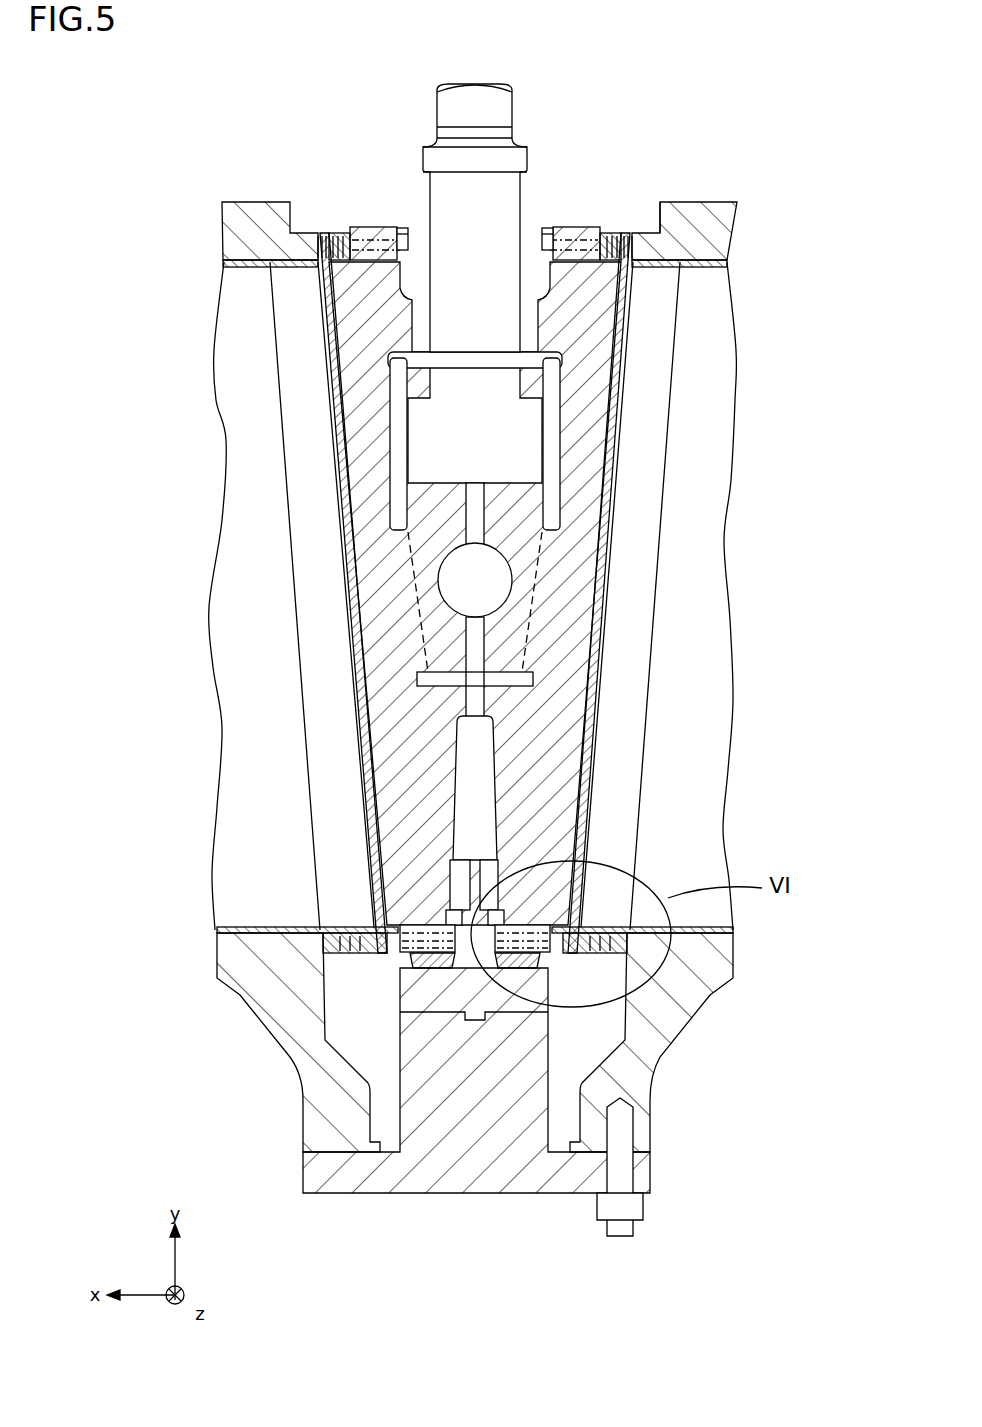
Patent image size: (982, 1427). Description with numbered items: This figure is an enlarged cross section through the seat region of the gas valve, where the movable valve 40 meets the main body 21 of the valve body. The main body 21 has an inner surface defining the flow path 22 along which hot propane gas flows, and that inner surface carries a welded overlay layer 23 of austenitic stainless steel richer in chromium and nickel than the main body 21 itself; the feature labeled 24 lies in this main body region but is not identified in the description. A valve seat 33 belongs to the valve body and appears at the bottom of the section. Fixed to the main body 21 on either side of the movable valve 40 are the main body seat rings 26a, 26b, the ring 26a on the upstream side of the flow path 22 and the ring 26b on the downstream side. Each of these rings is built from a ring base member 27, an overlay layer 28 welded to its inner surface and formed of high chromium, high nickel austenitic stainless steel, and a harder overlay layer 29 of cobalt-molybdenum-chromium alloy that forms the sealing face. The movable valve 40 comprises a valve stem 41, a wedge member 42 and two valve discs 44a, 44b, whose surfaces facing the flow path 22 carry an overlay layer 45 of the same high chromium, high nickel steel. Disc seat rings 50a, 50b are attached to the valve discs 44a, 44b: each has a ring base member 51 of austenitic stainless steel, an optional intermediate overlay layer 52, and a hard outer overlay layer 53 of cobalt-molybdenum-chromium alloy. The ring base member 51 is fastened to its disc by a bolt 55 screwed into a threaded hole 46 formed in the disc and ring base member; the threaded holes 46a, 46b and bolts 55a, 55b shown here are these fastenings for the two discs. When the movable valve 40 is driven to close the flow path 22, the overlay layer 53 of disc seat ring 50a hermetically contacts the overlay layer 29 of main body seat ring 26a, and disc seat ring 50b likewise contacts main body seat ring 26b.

The main body 21 is at (250, 236).
The flow path 22 is at (715, 325).
The overlay layer 23 is at (248, 265).
The recess 24 is at (665, 208).
The main body seat ring 26a is at (647, 67).
The main body seat ring 26b is at (303, 67).
The ring base member 27 is at (319, 231).
The overlay layer 28 is at (322, 231).
The overlay layer 29 is at (326, 231).
The valve seat 33 is at (468, 1195).
The movable valve 40 is at (474, 638).
The valve stem 41 is at (500, 323).
The wedge member 42 is at (430, 557).
The valve disc 44a is at (570, 640).
The valve disc 44b is at (385, 640).
The overlay layer 45 is at (395, 685).
The threaded hole 46 is at (447, 912).
The bracket 46a is at (574, 222).
The bracket 46b is at (373, 224).
The disc seat ring 50a is at (527, 67).
The disc seat ring 50b is at (423, 67).
The ring base member 51 is at (343, 231).
The overlay layer 52 is at (338, 231).
The overlay layer 53 is at (333, 231).
The bolt 55 is at (436, 962).
The bolt 55a is at (540, 227).
The bolt 55b is at (407, 227).